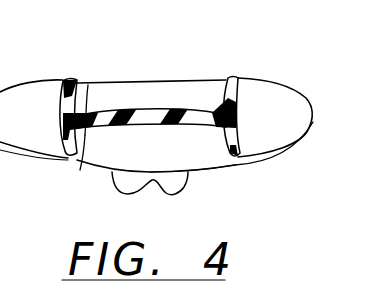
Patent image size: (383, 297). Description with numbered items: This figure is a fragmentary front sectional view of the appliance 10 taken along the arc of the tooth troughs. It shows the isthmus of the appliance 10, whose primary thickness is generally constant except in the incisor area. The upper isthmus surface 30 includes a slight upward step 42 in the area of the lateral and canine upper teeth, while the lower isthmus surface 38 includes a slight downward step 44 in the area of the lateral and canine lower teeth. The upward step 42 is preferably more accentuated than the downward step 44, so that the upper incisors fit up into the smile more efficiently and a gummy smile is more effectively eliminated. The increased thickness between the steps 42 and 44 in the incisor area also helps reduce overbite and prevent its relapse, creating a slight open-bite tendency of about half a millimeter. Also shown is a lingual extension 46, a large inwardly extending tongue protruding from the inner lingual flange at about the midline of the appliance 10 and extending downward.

The appliance 10 is at (259, 68).
The upper isthmus surface 30 is at (201, 140).
The lower isthmus surface 38 is at (188, 172).
The upward step 42 is at (88, 85).
The downward step 44 is at (80, 170).
The lingual extension 46 is at (201, 140).